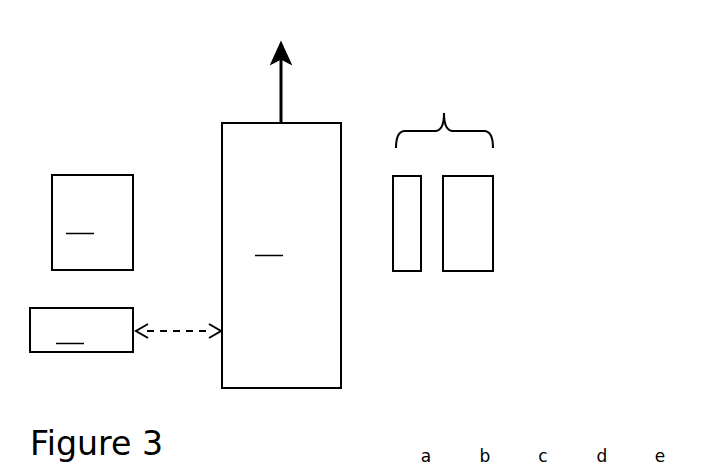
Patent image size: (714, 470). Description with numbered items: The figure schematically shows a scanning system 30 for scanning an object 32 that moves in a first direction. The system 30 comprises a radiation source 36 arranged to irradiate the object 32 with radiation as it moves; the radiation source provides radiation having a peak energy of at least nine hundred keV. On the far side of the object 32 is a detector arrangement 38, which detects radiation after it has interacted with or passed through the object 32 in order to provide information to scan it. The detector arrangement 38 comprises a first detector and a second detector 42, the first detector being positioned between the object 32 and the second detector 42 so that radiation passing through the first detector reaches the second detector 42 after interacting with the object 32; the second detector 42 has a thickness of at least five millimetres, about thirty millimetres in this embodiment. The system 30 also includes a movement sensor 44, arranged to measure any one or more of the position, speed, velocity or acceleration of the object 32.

The scanning system 30 is at (351, 215).
The object 32 is at (281, 215).
The radiation source 36 is at (404, 271).
The detector arrangement 38 is at (444, 114).
The second detector 42 is at (462, 271).
The movement sensor 44 is at (81, 330).